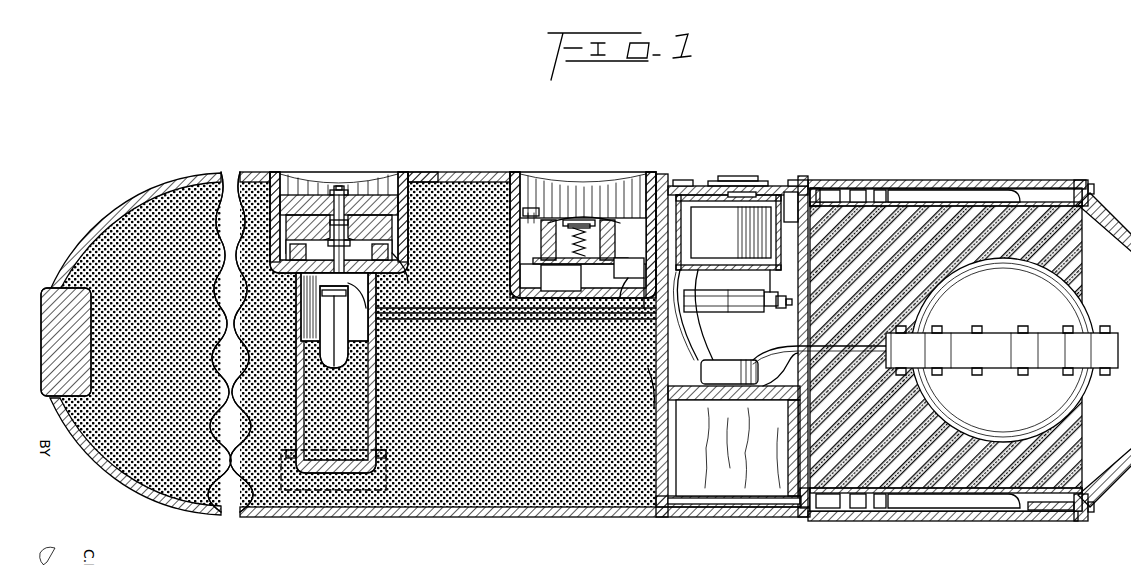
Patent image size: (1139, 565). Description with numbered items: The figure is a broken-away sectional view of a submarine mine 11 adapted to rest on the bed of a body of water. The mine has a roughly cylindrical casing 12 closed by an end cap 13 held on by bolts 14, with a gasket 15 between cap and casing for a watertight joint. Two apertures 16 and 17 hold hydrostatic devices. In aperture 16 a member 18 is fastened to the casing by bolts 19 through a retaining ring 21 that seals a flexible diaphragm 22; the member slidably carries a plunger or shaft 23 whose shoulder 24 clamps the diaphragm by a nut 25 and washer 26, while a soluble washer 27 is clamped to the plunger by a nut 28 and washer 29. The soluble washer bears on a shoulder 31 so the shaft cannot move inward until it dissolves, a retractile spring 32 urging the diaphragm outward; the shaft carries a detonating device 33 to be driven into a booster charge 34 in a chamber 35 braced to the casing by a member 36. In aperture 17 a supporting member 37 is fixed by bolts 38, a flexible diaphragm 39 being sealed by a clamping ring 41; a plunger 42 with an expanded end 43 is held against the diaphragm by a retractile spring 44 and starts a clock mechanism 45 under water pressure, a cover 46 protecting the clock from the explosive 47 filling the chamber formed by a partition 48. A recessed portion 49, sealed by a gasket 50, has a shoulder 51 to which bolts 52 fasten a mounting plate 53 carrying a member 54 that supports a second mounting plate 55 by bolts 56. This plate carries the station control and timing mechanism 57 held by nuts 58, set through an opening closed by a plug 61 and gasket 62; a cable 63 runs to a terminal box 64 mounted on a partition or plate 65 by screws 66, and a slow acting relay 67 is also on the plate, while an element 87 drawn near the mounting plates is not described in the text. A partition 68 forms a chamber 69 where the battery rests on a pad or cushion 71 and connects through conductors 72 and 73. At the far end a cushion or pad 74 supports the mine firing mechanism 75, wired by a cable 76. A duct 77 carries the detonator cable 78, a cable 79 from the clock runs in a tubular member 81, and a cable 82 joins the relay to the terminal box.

The submarine mine 11 is at (942, 167).
The casing 12 is at (548, 512).
The end cap 13 is at (1094, 212).
The bolts 14 is at (1092, 181).
The gasket 15 is at (1042, 512).
The aperture 16 is at (385, 175).
The aperture 17 is at (598, 208).
The member 18 is at (364, 174).
The bolts 19 is at (273, 177).
The retaining ring 21 is at (408, 226).
The flexible diaphragm 22 is at (390, 166).
The plunger or shaft 23 is at (302, 277).
The shoulder 24 is at (292, 207).
The nut 25 is at (312, 190).
The washer 26 is at (351, 232).
The soluble washer 27 is at (352, 182).
The nut 28 is at (335, 182).
The washer 29 is at (332, 178).
The shoulder 31 is at (242, 165).
The retractile spring 32 is at (410, 157).
The detonating device 33 is at (315, 300).
The booster charge 34 is at (372, 392).
The chamber 35 is at (282, 418).
The member 36 is at (377, 450).
The supporting member 37 is at (600, 203).
The bolts 38 is at (520, 208).
The flexible diaphragm 39 is at (572, 211).
The clamping ring 41 is at (526, 207).
The plunger 42 is at (580, 217).
The expanded end 43 is at (570, 220).
The retractile spring 44 is at (611, 210).
The clock mechanism 45 is at (561, 278).
The cover 46 is at (629, 268).
The explosive 47 is at (494, 508).
The partition 48 is at (638, 492).
The recessed portion 49 is at (802, 178).
The gasket 50 is at (666, 176).
The shoulder 51 is at (838, 182).
The bolts 52 is at (676, 170).
The mounting plate 53 is at (732, 190).
The member 54 is at (778, 186).
The mounting plate 55 is at (768, 282).
The bolts 56 is at (772, 257).
The station control and timing mechanism 57 is at (731, 232).
The nuts 58 is at (745, 304).
The plug 61 is at (720, 171).
The gasket 62 is at (730, 166).
The cable 63 is at (690, 186).
The terminal box 64 is at (738, 354).
The partition or plate 65 is at (780, 369).
The screws 66 is at (722, 384).
The slow acting relay 67 is at (770, 300).
The partition 68 is at (821, 350).
The chamber 69 is at (790, 512).
The pad or cushion 71 is at (703, 514).
The electrical conductor 72 is at (655, 390).
The electrical conductor 73 is at (757, 398).
The cushion or pad 74 is at (954, 194).
The mine firing mechanism 75 is at (1003, 350).
The cable 76 is at (772, 406).
The tubular member or duct 77 is at (444, 300).
The cable 78 is at (356, 309).
The cable 79 is at (622, 290).
The tubular member 81 is at (636, 300).
The cable 82 is at (645, 388).
The plate 87 is at (742, 184).